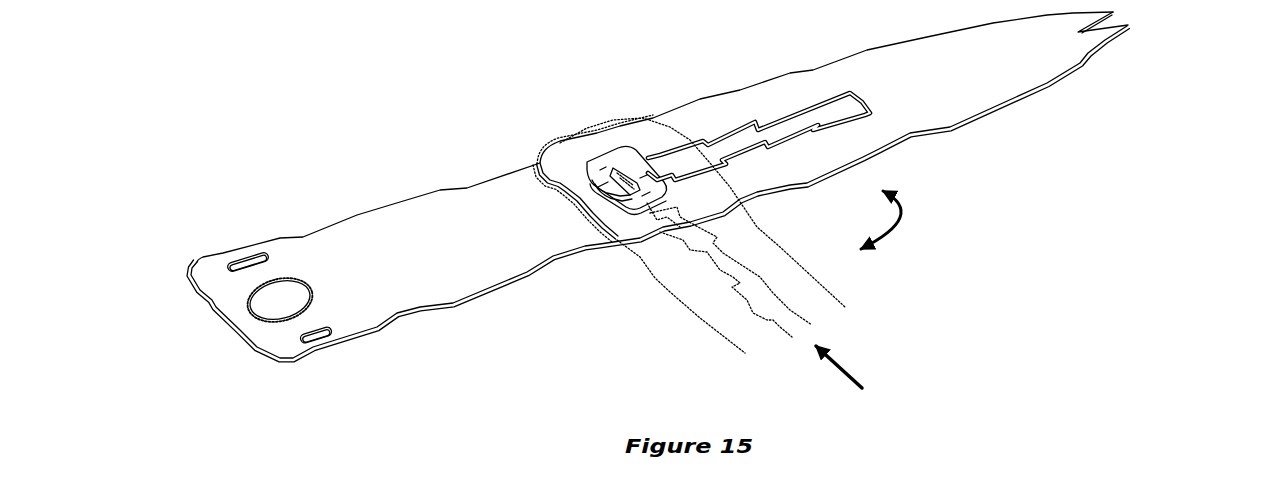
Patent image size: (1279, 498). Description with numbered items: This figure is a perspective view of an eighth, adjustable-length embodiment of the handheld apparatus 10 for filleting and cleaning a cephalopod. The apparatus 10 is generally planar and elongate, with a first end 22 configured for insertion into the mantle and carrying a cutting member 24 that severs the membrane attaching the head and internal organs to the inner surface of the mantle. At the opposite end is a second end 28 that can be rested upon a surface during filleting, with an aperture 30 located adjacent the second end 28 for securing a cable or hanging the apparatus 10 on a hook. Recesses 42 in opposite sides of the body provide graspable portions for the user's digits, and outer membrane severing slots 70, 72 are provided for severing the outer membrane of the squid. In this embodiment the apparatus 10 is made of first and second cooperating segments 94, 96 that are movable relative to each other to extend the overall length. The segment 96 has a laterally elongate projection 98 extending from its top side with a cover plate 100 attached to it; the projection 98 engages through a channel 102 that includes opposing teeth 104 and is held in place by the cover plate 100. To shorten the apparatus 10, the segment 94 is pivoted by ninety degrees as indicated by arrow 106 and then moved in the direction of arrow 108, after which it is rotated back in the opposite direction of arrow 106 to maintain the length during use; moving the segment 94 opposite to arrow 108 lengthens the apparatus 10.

The handheld apparatus 10 is at (481, 118).
The first end 22 is at (1098, 92).
The cutting member 24 is at (1131, 13).
The second end 28 is at (180, 317).
The aperture 30 is at (249, 314).
The recesses 42 is at (414, 320).
The outer membrane severing slot 70 is at (242, 258).
The outer membrane severing slot 72 is at (318, 342).
The first cooperating segment 94 is at (698, 294).
The second cooperating segment 96 is at (458, 252).
The laterally elongate projection 98 is at (612, 153).
The cover plate 100 is at (630, 190).
The channel 102 is at (753, 104).
The opposing teeth 104 is at (716, 136).
The arrow 106 is at (900, 222).
The arrow 108 is at (847, 370).